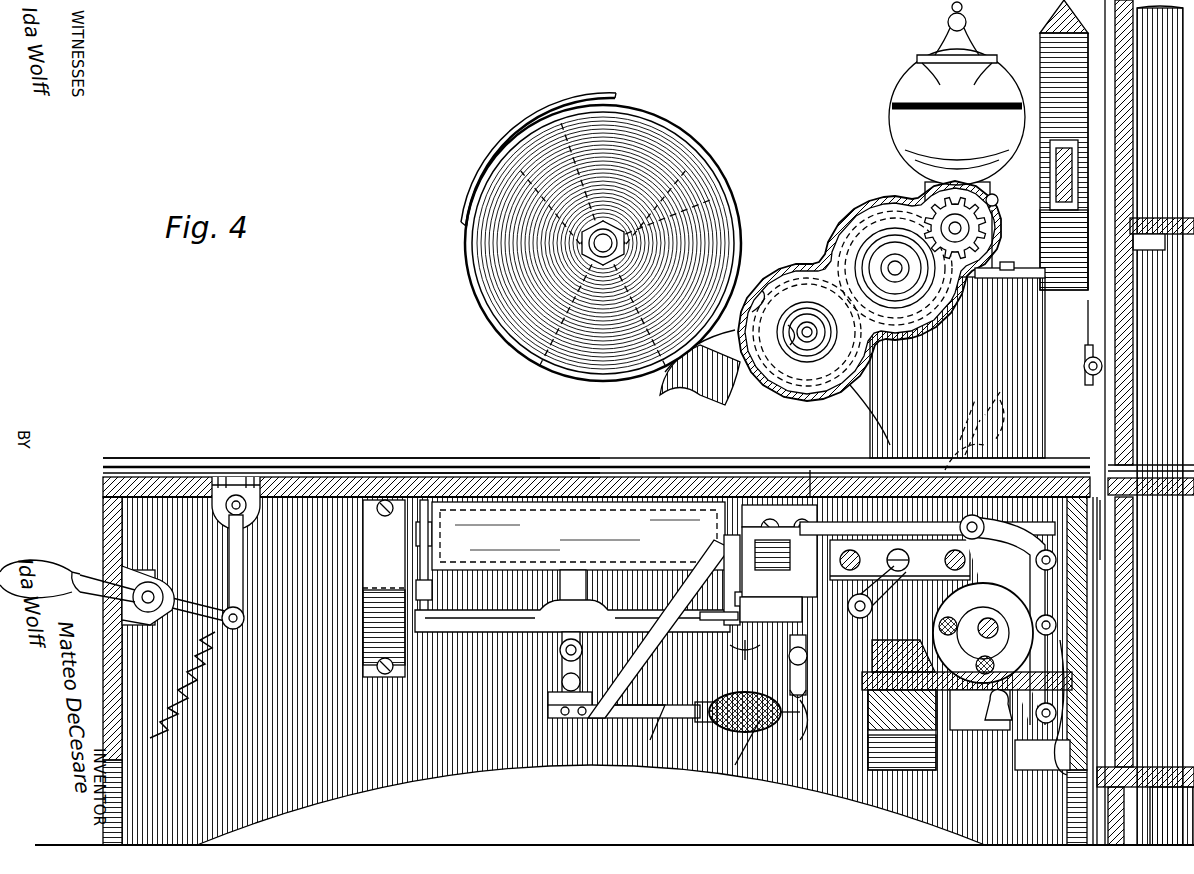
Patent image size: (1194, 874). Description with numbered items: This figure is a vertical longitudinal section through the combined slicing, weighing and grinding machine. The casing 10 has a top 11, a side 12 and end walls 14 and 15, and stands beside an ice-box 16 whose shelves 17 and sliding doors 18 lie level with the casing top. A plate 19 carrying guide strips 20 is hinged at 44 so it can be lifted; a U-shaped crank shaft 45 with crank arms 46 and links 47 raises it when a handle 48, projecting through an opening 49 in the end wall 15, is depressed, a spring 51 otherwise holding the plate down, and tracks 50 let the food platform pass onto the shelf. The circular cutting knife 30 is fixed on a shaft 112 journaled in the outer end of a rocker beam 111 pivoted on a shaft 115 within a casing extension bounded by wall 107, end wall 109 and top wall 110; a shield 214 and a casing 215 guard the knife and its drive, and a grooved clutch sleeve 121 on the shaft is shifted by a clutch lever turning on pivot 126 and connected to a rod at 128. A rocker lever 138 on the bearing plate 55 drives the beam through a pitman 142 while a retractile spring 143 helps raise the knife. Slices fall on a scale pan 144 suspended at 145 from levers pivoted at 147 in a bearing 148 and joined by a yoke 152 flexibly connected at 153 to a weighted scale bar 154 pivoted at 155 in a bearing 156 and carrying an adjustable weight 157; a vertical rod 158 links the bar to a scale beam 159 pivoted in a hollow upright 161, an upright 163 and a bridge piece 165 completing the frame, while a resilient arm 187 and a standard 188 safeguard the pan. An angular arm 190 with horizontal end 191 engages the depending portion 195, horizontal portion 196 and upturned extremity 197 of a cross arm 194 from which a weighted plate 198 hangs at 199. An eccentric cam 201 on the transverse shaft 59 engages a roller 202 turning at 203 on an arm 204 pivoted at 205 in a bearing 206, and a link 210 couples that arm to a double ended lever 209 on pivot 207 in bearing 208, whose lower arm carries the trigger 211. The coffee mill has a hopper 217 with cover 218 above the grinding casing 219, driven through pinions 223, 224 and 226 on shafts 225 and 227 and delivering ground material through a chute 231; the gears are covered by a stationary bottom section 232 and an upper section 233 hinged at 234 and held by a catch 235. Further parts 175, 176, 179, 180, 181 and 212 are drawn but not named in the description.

The casing 10 is at (600, 770).
The top 11 is at (452, 490).
The side wall 12 is at (345, 497).
The end wall 14 is at (1100, 640).
The end wall 15 is at (103, 625).
The ice-box 16 is at (1142, 632).
The shelves 17 is at (1165, 440).
The sliding doors 18 is at (1100, 395).
The plate 19 is at (268, 470).
The guide strips 20 is at (396, 460).
The cutting knife 30 is at (565, 366).
The hinge 44 is at (1151, 496).
The crank shaft 45 is at (160, 590).
The crank arms 46 is at (200, 600).
The links 47 is at (245, 545).
The handle 48 is at (60, 570).
The opening 49 is at (118, 609).
The tracks 50 is at (1133, 452).
The spring 51 is at (185, 686).
The bearing plate 55 is at (805, 745).
The transverse shaft 59 is at (983, 633).
The side wall of extension 107 is at (957, 367).
The end wall of extension 109 is at (1085, 332).
The top wall 110 is at (1010, 262).
The rocker beam 111 is at (590, 230).
The cutter shaft 112 is at (618, 262).
The pivot shaft 115 is at (818, 332).
The clutch sleeve 121 is at (790, 660).
The pivot 126 is at (810, 470).
The rod connection 128 is at (948, 665).
The rocker lever 138 is at (900, 770).
The pitman 142 is at (771, 577).
The retractile spring 143 is at (1002, 440).
The scale pan 144 is at (966, 435).
The pivotal suspension 145 is at (432, 537).
The lever pivot 147 is at (432, 590).
The bearing 148 is at (384, 588).
The yoke 152 is at (470, 632).
The flexible connections 153 is at (560, 676).
The weighted scale bar 154 is at (664, 735).
The horizontal pivot 155 is at (978, 760).
The bearing 156 is at (1080, 740).
The adjustable weight 157 is at (740, 765).
The vertical rod 158 is at (1082, 362).
The scale beam 159 is at (1064, 161).
The hollow upright 161 is at (1052, 28).
The upright 163 is at (1064, 250).
The bridge piece 165 is at (1090, 48).
The stop 175 is at (728, 596).
The bar 176 is at (713, 623).
The knurled handle 179 is at (755, 715).
The rod end 180 is at (790, 720).
The horizontal rod 181 is at (624, 736).
The arm 187 is at (556, 696).
The standard 188 is at (578, 575).
The arm 190 is at (680, 630).
The horizontal end 191 is at (710, 580).
The cross arm 194 is at (779, 519).
The depending portion 195 is at (725, 555).
The horizontal portion 196 is at (695, 560).
The upturned extremity 197 is at (672, 560).
The weighted plate 198 is at (900, 550).
The plate pivot 199 is at (815, 530).
The eccentric cam 201 is at (983, 645).
The antifriction roller 202 is at (966, 615).
The roller pivot 203 is at (1088, 612).
The upwardly projecting arm 204 is at (1098, 668).
The horizontal pivot 205 is at (1040, 760).
The bearing 206 is at (1048, 807).
The horizontal pivot 207 is at (900, 548).
The bearing 208 is at (885, 558).
The double ended lever 209 is at (990, 615).
The link 210 is at (1139, 530).
The trigger 211 is at (745, 658).
The block 212 is at (779, 562).
The shield 214 is at (470, 182).
The drive casing 215 is at (630, 200).
The hopper 217 is at (957, 128).
The removable cover 218 is at (957, 54).
The grinding casing 219 is at (930, 192).
The pinion 223 is at (795, 330).
The pinion 224 is at (872, 248).
The shaft 225 is at (850, 272).
The pinion 226 is at (980, 225).
The grinder shaft 227 is at (994, 258).
The chute 231 is at (665, 394).
The bottom cover section 232 is at (878, 416).
The upper cover section 233 is at (762, 290).
The hinge 234 is at (996, 200).
The catch 235 is at (700, 382).